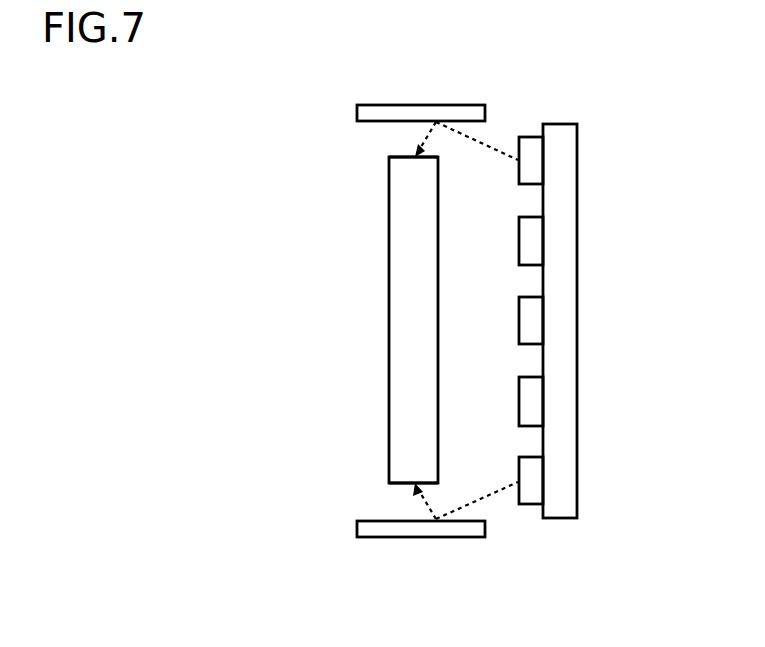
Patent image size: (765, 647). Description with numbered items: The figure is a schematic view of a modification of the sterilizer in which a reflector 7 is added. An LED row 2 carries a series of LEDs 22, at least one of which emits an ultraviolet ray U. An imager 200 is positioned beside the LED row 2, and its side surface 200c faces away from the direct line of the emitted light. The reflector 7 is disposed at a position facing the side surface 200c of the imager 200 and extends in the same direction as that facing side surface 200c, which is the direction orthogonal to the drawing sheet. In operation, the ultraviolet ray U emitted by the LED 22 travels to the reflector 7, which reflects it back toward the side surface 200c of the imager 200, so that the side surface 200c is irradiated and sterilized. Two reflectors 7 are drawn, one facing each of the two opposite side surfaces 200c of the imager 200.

The LED row 2 is at (579, 274).
The LED 22 is at (530, 137).
The reflector 7 is at (416, 105).
The imager 200 is at (374, 311).
The side surface 200c is at (396, 157).
The ultraviolet ray U is at (488, 147).